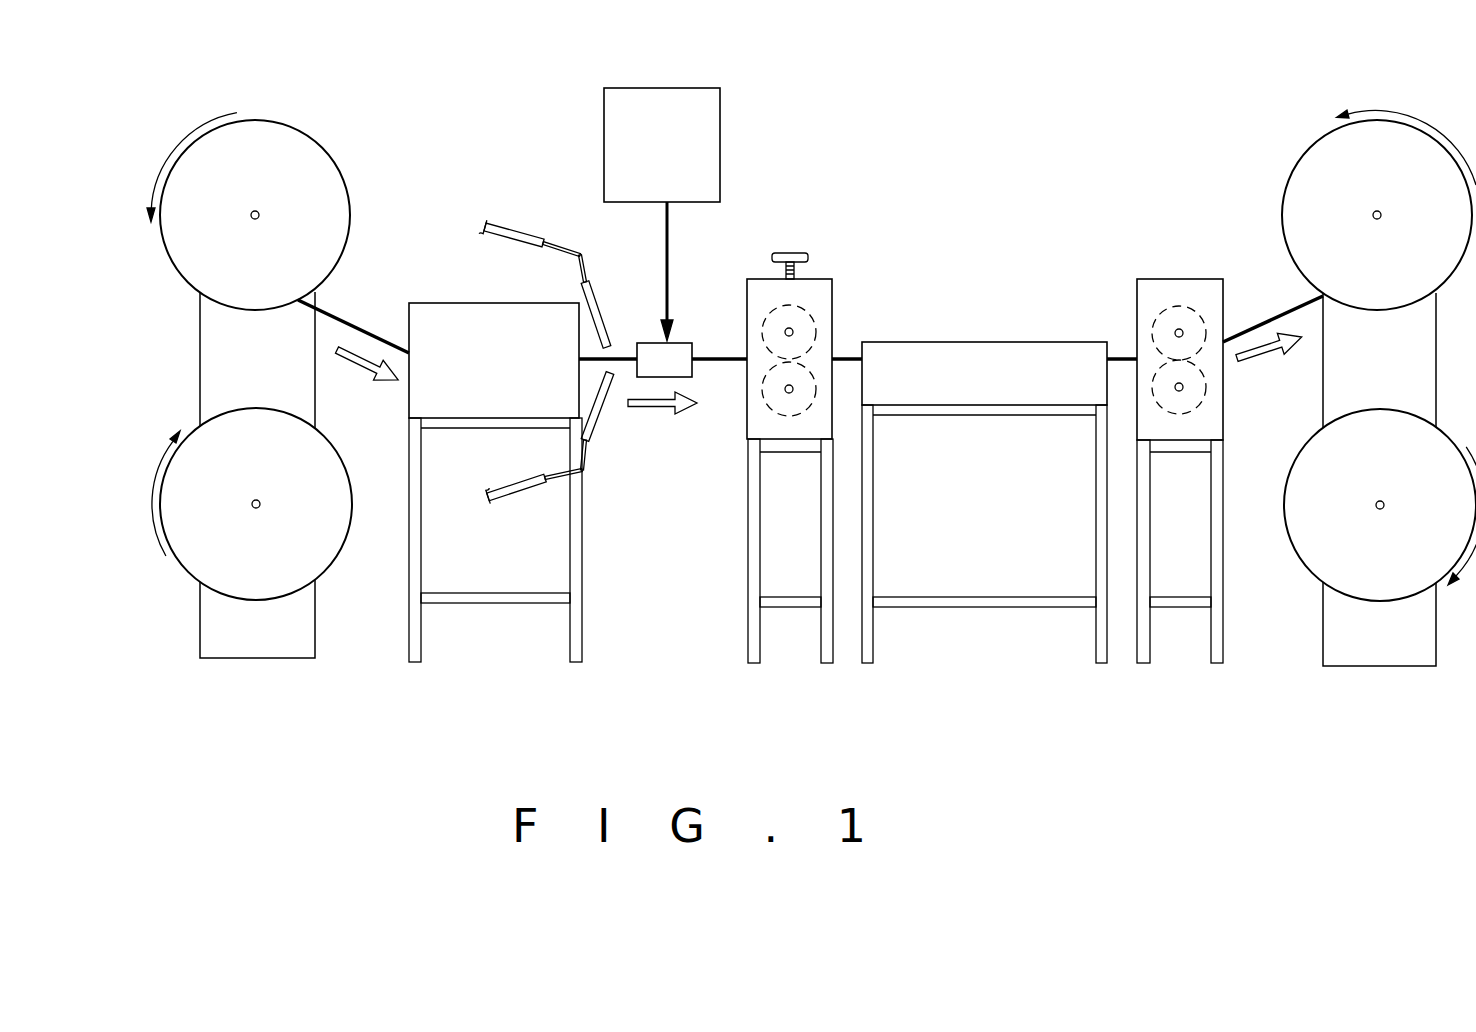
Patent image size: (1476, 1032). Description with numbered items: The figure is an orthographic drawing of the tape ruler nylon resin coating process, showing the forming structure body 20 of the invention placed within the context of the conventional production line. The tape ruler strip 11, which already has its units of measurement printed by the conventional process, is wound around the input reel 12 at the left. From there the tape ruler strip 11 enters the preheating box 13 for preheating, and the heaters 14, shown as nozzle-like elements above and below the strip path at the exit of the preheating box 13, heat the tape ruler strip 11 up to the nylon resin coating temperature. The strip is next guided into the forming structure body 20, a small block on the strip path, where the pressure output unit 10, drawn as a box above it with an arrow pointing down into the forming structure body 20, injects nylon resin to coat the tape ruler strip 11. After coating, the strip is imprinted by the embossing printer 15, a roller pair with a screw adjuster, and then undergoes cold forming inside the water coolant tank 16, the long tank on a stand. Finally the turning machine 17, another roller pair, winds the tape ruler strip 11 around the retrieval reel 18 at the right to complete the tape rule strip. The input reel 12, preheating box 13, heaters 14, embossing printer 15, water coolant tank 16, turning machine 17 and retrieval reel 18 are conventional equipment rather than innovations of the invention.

The pressure output unit 10 is at (694, 108).
The tape ruler strip 11 is at (356, 327).
The input reel 12 is at (288, 165).
The preheating box 13 is at (455, 323).
The heaters 14 is at (520, 237).
The embossing printer 15 is at (823, 300).
The water coolant tank 16 is at (992, 362).
The turning machine 17 is at (1155, 297).
The retrieval reel 18 is at (1323, 175).
The forming structure body 20 is at (678, 352).